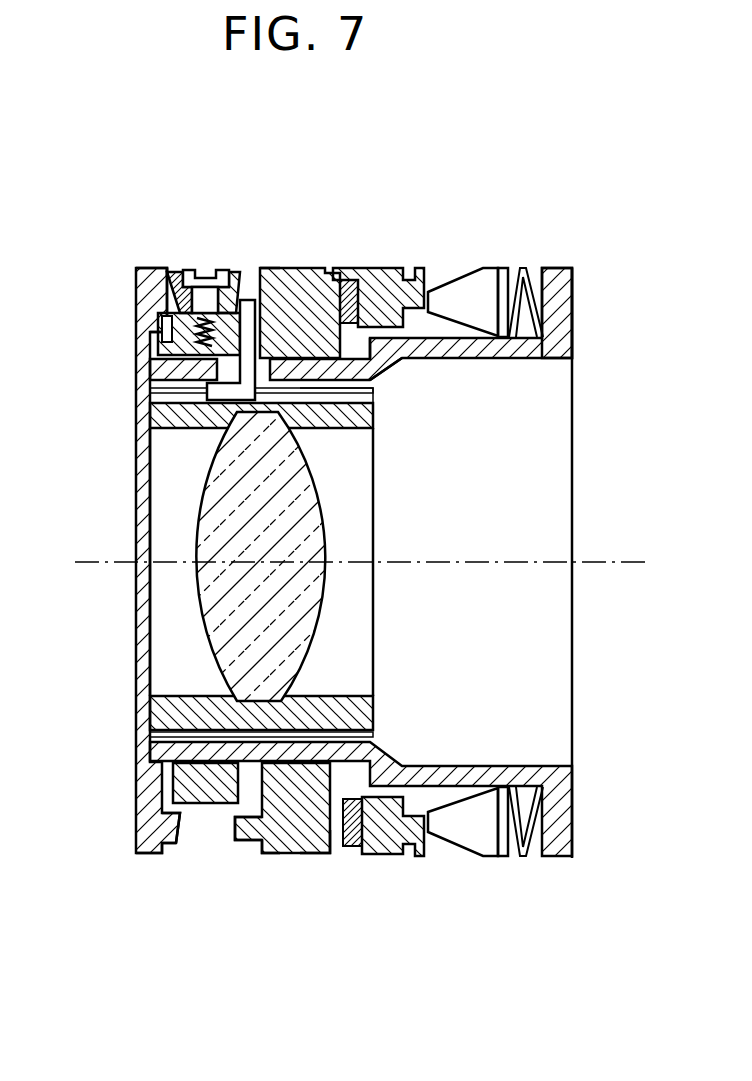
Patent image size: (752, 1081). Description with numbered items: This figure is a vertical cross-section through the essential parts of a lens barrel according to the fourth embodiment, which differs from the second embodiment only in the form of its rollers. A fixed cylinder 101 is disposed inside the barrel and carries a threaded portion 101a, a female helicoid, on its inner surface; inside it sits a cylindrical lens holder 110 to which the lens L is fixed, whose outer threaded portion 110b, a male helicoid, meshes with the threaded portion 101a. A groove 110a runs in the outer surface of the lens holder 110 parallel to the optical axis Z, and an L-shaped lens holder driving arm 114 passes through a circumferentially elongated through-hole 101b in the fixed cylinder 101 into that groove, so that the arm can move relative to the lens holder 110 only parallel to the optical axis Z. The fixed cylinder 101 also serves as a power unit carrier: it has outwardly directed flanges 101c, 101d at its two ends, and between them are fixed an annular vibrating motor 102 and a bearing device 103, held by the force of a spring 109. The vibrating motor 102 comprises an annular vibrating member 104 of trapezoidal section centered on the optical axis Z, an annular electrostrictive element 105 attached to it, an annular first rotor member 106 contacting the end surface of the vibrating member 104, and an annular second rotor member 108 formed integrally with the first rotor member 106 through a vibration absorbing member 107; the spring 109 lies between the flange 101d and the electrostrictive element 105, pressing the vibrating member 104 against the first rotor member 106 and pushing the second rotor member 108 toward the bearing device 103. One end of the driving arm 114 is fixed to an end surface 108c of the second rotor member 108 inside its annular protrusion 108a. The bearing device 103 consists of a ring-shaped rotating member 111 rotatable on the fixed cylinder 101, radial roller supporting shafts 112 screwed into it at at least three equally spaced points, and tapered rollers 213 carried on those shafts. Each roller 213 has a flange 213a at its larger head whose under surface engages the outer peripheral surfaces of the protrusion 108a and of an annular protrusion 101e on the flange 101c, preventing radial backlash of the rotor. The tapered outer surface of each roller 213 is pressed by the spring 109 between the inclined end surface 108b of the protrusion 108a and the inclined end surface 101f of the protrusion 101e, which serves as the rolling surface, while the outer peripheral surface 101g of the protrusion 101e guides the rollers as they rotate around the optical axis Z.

The fixed cylinder 101 is at (558, 358).
The threaded portion 101a is at (393, 364).
The through-hole 101b is at (207, 427).
The flange 101c is at (150, 331).
The flange 101d is at (560, 320).
The annular protrusion 101e is at (150, 272).
The end surface 101f is at (186, 835).
The outer peripheral surface 101g is at (172, 846).
The vibrating motor 102 is at (618, 206).
The bearing device 103 is at (162, 350).
The vibrating member 104 is at (462, 278).
The electrostrictive element 105 is at (502, 268).
The first rotor member 106 is at (397, 267).
The vibration absorbing member 107 is at (358, 269).
The second rotor member 108 is at (313, 267).
The annular protrusion 108a is at (255, 267).
The end surface 108b is at (242, 832).
The end surface 108c is at (312, 853).
The spring 109 is at (533, 268).
The lens holder 110 is at (152, 405).
The groove 110a is at (322, 386).
The threaded portion 110b is at (327, 400).
The rotating member 111 is at (160, 297).
The roller supporting shaft 112 is at (190, 267).
The lens holder driving arm 114 is at (225, 398).
The roller 213 is at (173, 267).
The flange 213a is at (230, 267).
The lens L is at (210, 597).
The optical axis Z is at (617, 557).